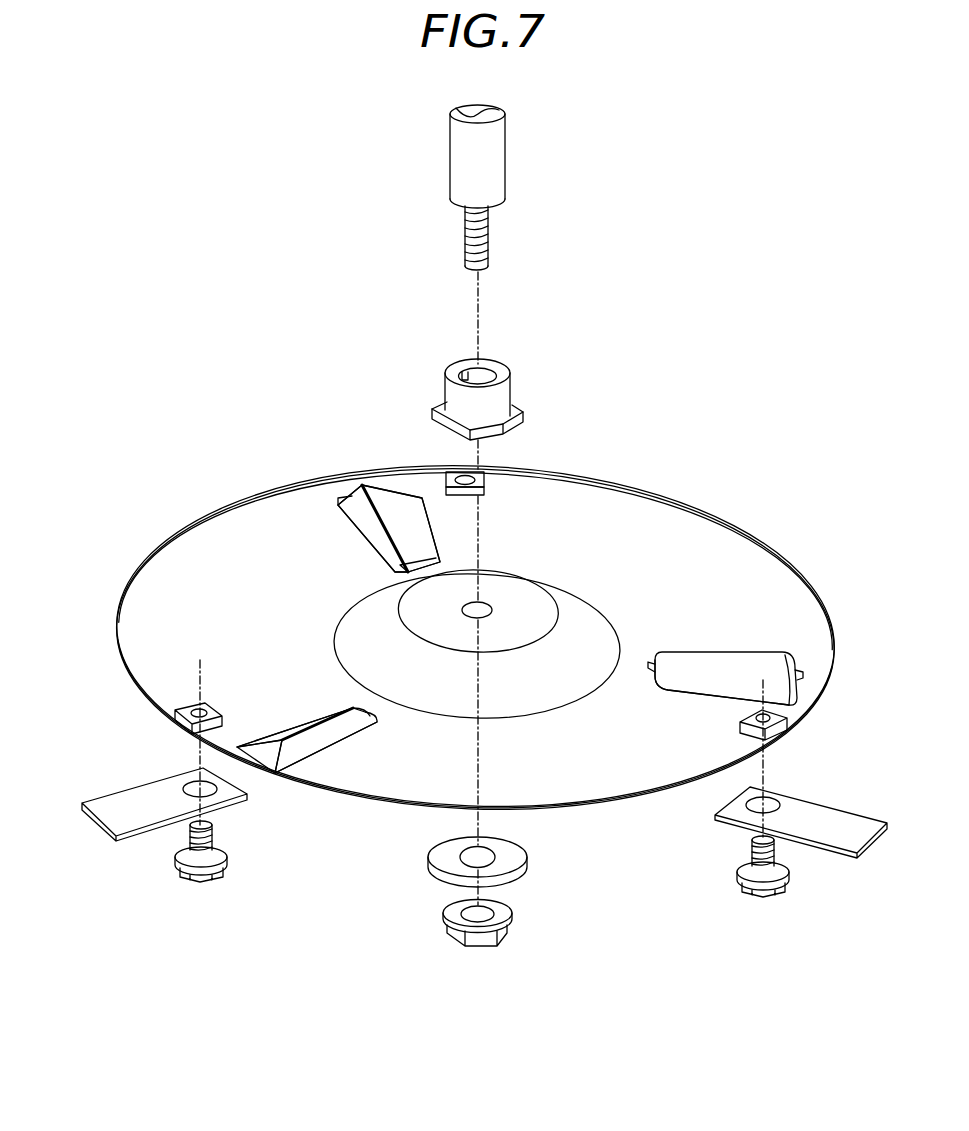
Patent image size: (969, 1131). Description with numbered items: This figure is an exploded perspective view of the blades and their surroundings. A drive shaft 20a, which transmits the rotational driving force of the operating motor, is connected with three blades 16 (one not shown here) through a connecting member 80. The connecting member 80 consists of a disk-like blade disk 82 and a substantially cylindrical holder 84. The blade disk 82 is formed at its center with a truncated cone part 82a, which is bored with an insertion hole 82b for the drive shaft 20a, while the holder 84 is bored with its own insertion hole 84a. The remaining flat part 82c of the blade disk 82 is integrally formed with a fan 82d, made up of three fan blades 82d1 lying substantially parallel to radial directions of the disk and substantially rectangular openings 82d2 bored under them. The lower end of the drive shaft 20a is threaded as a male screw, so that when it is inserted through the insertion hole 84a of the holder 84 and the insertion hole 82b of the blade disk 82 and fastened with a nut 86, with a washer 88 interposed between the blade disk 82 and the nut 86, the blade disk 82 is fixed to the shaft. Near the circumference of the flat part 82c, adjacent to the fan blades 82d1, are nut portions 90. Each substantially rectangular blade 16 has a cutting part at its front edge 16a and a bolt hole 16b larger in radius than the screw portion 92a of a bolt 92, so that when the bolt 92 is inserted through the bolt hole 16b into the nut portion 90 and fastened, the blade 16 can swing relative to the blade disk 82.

The drive shaft 20a is at (512, 156).
The insertion hole 84a is at (479, 372).
The holder 84 is at (503, 385).
The connecting member 80 is at (609, 447).
The blade disk 82 is at (703, 506).
The truncated cone part 82a is at (590, 620).
The insertion hole 82b is at (494, 609).
The flat part 82c is at (577, 767).
The fan 82d is at (391, 486).
The fan blade 82d1 is at (418, 524).
The opening 82d2 is at (377, 539).
The nut portion 90 is at (482, 468).
The blade 16 is at (464, 819).
The edge 16a is at (130, 837).
The bolt hole 16b is at (190, 783).
The bolt 92 is at (462, 870).
The screw portion 92a is at (213, 833).
The washer 88 is at (527, 862).
The nut 86 is at (510, 915).